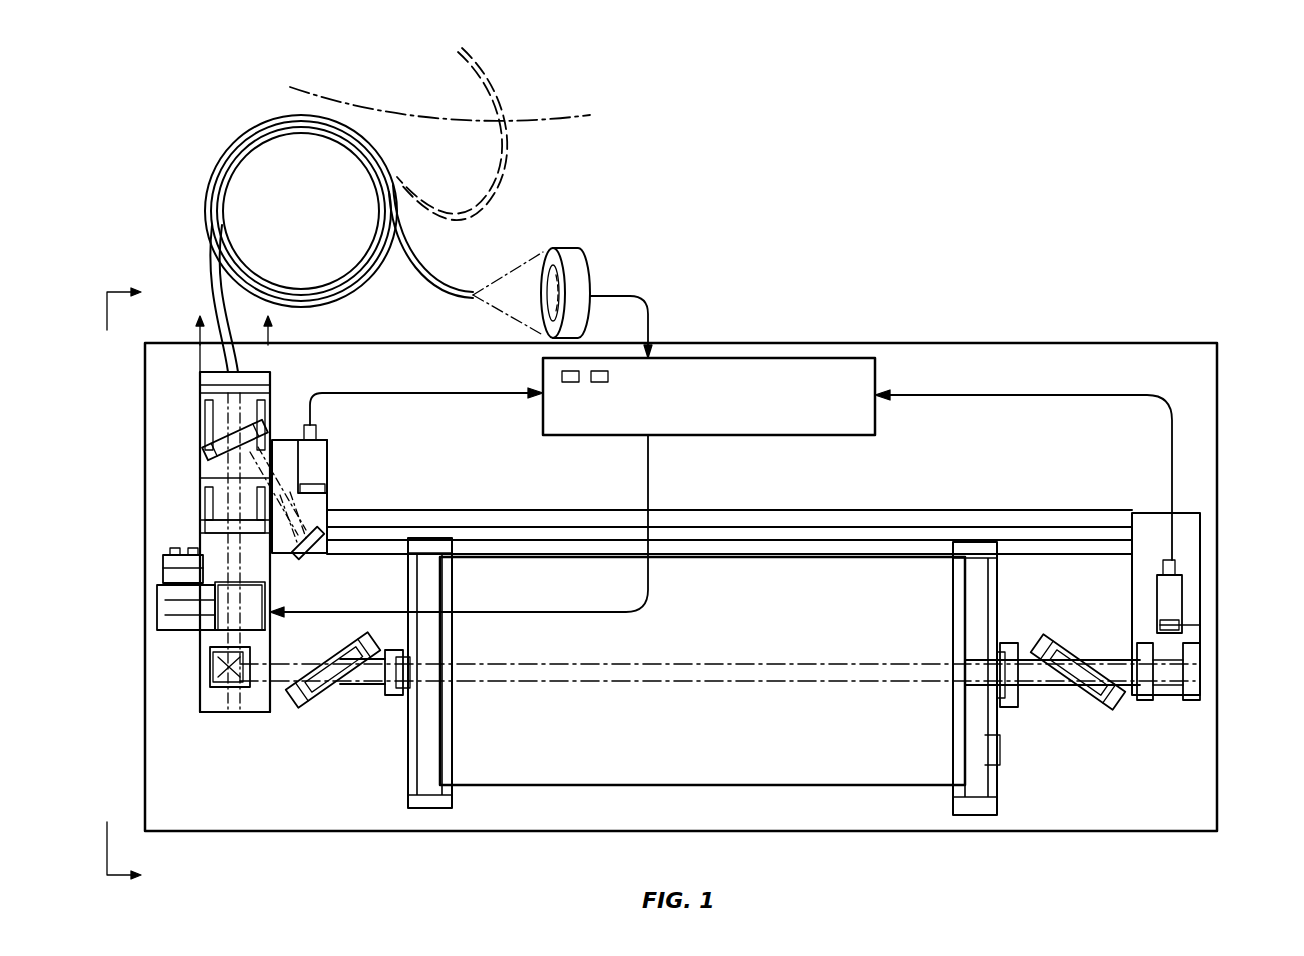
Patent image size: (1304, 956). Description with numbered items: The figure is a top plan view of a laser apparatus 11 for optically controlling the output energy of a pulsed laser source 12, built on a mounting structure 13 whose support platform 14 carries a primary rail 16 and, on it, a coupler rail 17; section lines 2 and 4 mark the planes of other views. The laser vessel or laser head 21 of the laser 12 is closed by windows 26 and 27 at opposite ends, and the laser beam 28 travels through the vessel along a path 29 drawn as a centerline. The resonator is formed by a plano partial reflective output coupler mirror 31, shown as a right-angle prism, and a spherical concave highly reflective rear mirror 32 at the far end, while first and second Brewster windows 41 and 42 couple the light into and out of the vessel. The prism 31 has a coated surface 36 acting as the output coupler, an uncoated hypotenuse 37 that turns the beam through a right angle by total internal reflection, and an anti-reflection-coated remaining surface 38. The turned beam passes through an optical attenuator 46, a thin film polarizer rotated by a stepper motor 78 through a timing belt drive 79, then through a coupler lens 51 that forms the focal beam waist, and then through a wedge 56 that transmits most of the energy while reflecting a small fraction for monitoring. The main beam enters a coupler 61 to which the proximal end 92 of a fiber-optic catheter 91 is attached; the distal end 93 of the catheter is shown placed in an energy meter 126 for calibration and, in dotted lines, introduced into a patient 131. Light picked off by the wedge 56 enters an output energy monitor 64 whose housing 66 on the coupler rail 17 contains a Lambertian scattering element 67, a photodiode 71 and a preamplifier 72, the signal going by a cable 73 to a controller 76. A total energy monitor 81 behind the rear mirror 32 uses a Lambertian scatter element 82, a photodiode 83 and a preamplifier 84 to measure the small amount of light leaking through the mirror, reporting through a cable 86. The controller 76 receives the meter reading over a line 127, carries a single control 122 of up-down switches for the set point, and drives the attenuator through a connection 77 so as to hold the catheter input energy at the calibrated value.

The section line 2- 2 is at (124, 581).
The section line 4- 4 is at (232, 344).
The laser apparatus 11 is at (685, 312).
The laser source 12 is at (534, 815).
The mounting structure 13 is at (777, 840).
The support platform 14 is at (247, 828).
The primary rail 16 is at (795, 525).
The coupler rail 17 is at (255, 570).
The laser vessel 21 is at (845, 790).
The window 26 is at (1030, 690).
The window 27 is at (395, 700).
The laser beam 28 is at (590, 668).
The path 29 is at (512, 682).
The output coupler mirror 31 is at (215, 685).
The highly reflective mirror 32 is at (1148, 700).
The surface 36 is at (228, 712).
The hypotenuse 37 is at (220, 665).
The remaining surface 38 is at (235, 648).
The first Brewster window 41 is at (1090, 692).
The second Brewster window 42 is at (325, 697).
The optical attenuator 46 is at (218, 622).
The coupler lens 51 is at (212, 528).
The wedge 56 is at (225, 440).
The coupler 61 is at (225, 375).
The output energy monitor 64 is at (282, 438).
The housing 66 is at (318, 536).
The Lambertian scattering element 67 is at (310, 553).
The photodiode 71 is at (312, 490).
The preamplifier 72 is at (312, 450).
The cable 73 is at (460, 390).
The controller 76 is at (745, 358).
The control line 77 is at (560, 612).
The stepper motor 78 is at (172, 565).
The timing belt drive 79 is at (180, 605).
The total energy monitor 81 is at (1208, 555).
The Lambertian scatter element 82 is at (1195, 670).
The photodiode 83 is at (1190, 630).
The preamplifier 84 is at (1170, 590).
The cable 86 is at (980, 395).
The catheter 91 is at (210, 215).
The proximal end 92 is at (225, 335).
The distal end 93 is at (470, 288).
The single control 122 is at (600, 382).
The energy meter 126 is at (565, 252).
The laser control line 127 is at (620, 296).
The patient 131 is at (555, 118).